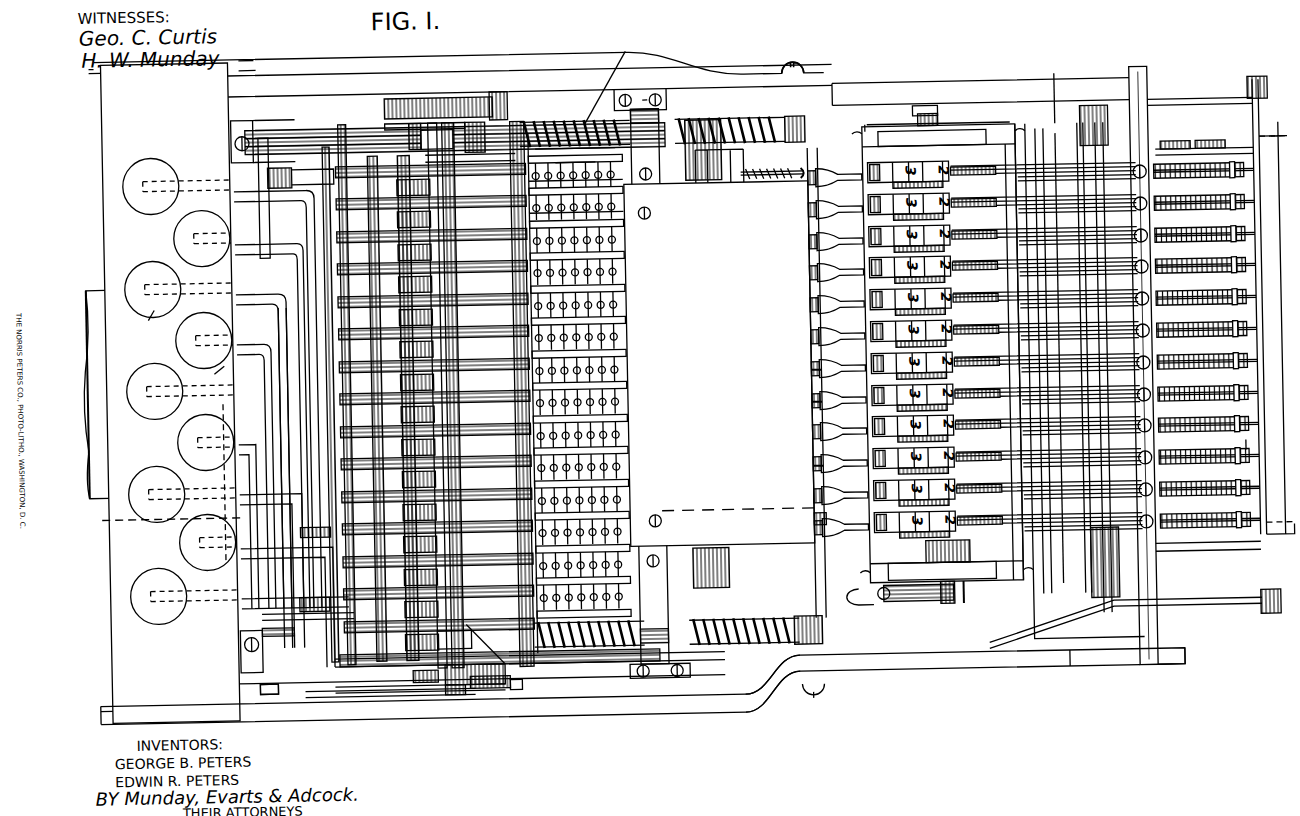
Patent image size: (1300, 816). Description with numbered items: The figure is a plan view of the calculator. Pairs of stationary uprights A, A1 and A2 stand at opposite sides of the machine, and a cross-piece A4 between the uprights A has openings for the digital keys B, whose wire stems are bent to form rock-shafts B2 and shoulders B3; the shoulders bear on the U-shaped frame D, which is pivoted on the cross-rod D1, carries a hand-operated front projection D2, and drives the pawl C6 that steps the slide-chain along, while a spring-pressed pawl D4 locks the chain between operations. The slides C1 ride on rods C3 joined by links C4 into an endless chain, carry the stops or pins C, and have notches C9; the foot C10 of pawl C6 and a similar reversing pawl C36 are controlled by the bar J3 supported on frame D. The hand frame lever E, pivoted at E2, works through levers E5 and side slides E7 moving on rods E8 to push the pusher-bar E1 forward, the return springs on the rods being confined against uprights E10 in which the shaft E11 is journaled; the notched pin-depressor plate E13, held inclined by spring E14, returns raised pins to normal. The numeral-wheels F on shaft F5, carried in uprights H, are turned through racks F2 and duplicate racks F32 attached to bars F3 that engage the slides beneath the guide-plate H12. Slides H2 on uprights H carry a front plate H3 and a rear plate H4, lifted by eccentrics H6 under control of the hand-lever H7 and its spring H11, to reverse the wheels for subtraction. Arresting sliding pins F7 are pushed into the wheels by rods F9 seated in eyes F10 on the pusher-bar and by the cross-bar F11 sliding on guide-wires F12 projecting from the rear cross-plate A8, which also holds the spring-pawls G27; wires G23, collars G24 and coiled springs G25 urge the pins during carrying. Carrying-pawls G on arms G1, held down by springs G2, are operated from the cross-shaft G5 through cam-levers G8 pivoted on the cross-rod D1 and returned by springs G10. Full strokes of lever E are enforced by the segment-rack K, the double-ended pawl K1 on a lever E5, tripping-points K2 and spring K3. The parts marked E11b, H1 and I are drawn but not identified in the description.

The stationary uprights A is at (230, 673).
The stationary uprights A1 is at (778, 680).
The rear uprights A2 is at (1100, 674).
The cross-piece A4 is at (162, 393).
The rear cross-plate A8 is at (1153, 566).
The digital keys B is at (180, 391).
The rock-shafts B2 is at (211, 379).
The shoulders B3 is at (145, 323).
The stops or pins C is at (625, 366).
The slides C1 is at (622, 338).
The rods C3 is at (520, 500).
The links C4 is at (372, 520).
The pawl C6 is at (314, 602).
The notches C9 is at (622, 314).
The foot C10 is at (294, 597).
The pawl C36 is at (300, 165).
The U-shaped frame D is at (284, 684).
The cross-rod D1 is at (848, 596).
The front projection D2 is at (108, 428).
The spring-pressed pawl D4 is at (314, 504).
The hand frame lever E is at (543, 56).
The pusher-bar E1 is at (594, 118).
The pivots E2 is at (826, 712).
The levers E5 is at (450, 95).
The side slides E7 is at (583, 660).
The rods E8 is at (355, 125).
The uprights E10 is at (430, 385).
The shaft E11 is at (520, 505).
The guide post upper E11b is at (719, 166).
The pin-depressor plate E13 is at (450, 485).
The spring E14 is at (494, 682).
The numeral-wheels F is at (815, 345).
The racks F2 is at (815, 470).
The bars F3 is at (815, 376).
The racks F32 is at (818, 408).
The shaft F5 is at (938, 118).
The sliding pins F7 is at (1252, 433).
The rods F9 is at (570, 117).
The eyes F10 is at (648, 684).
The cross-bar F11 is at (1261, 440).
The guide-wires F12 is at (1230, 559).
The carrying-pawls G is at (1057, 150).
The arms G1 is at (1095, 488).
The springs G2 is at (1092, 170).
The cross-shaft G5 is at (768, 568).
The cam-levers G8 is at (808, 182).
The springs G10 is at (770, 181).
The wires G23 is at (1172, 175).
The collars G24 is at (1195, 174).
The coiled springs G25 is at (1230, 176).
The spring-pawls G27 is at (1025, 152).
The stationary uprights H is at (972, 138).
The pin H1 is at (974, 590).
The slides H2 is at (880, 133).
The front plate H3 is at (813, 540).
The rear plate H4 is at (1026, 578).
The eccentrics H6 is at (915, 127).
The hand-lever H7 is at (893, 606).
The spring H11 is at (944, 610).
The guide-plate H12 is at (721, 364).
The lever I is at (486, 155).
The bar J3 is at (258, 622).
The segment-rack K is at (400, 687).
The reversing double-ended pawl K1 is at (450, 688).
The tripping-points K2 is at (365, 686).
The spring K3 is at (520, 683).